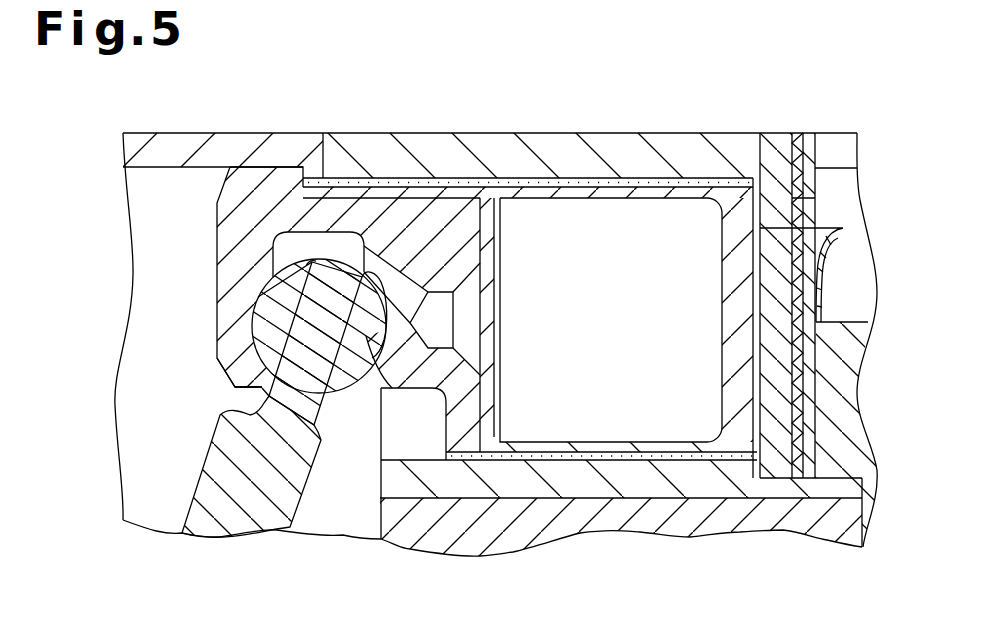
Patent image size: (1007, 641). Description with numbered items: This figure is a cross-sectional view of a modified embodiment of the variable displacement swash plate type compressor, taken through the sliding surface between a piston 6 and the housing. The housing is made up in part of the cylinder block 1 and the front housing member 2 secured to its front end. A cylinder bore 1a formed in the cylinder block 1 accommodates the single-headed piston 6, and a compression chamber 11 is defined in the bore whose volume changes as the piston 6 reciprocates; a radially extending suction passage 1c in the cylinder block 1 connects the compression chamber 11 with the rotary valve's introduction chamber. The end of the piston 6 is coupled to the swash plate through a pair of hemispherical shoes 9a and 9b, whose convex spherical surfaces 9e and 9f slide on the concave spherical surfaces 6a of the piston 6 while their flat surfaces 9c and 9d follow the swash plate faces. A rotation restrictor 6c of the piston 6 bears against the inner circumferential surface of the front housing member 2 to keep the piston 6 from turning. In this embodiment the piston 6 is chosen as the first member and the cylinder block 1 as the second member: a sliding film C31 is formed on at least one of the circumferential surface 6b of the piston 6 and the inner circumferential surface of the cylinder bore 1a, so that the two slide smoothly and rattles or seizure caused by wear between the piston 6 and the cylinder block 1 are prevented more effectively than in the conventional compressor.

The cylinder block 1 is at (481, 143).
The cylinder bore 1a is at (553, 196).
The suction passage 1c is at (688, 455).
The front housing member 2 is at (163, 152).
The piston 6 is at (433, 200).
The concave spherical surface 6a is at (256, 332).
The circumferential surface 6b is at (560, 455).
The rotation restrictor 6c is at (253, 165).
The shoe 9a is at (282, 283).
The shoe 9b is at (368, 300).
The flat surface 9c is at (284, 358).
The flat surface 9d is at (336, 336).
The convex spherical surface 9e is at (267, 302).
The convex spherical surface 9f is at (394, 288).
The compression chamber 11 is at (753, 180).
The sliding film C31 is at (684, 183).